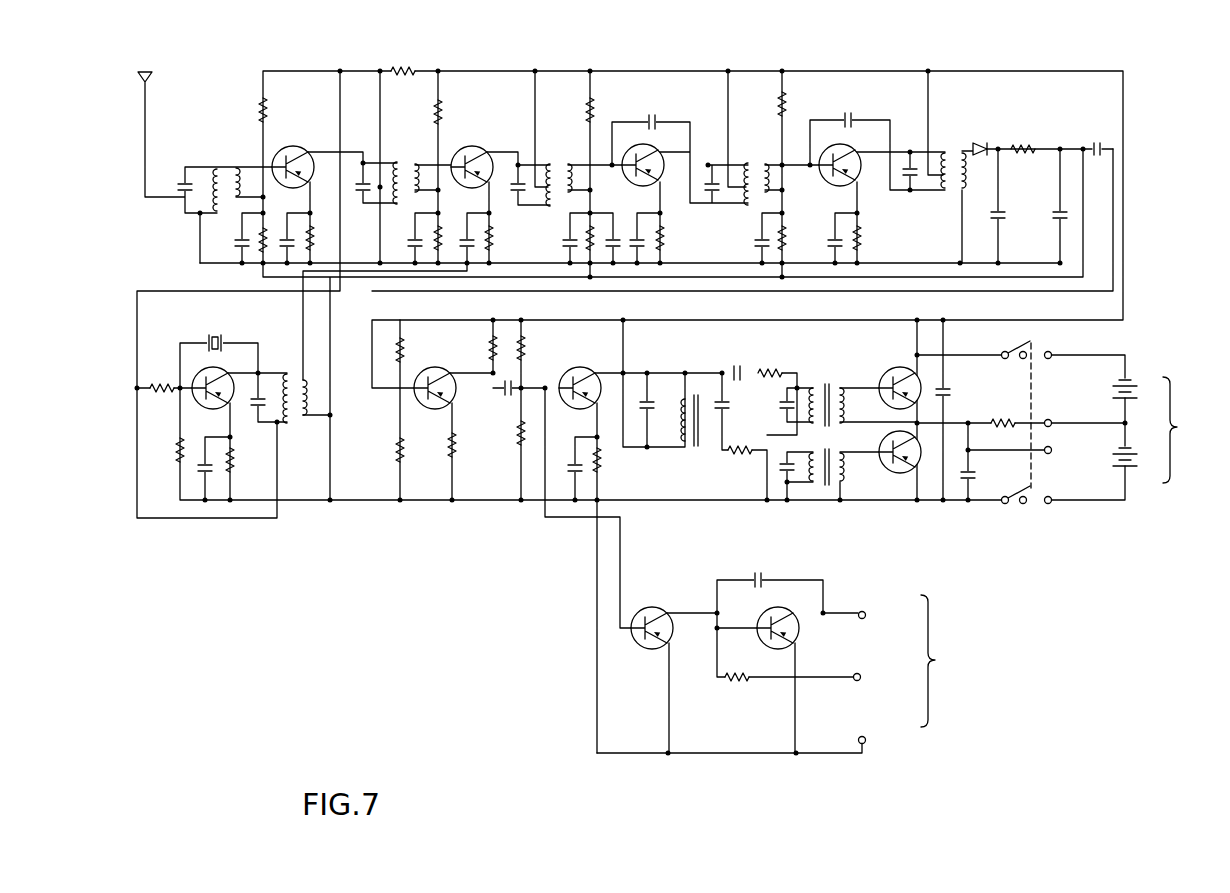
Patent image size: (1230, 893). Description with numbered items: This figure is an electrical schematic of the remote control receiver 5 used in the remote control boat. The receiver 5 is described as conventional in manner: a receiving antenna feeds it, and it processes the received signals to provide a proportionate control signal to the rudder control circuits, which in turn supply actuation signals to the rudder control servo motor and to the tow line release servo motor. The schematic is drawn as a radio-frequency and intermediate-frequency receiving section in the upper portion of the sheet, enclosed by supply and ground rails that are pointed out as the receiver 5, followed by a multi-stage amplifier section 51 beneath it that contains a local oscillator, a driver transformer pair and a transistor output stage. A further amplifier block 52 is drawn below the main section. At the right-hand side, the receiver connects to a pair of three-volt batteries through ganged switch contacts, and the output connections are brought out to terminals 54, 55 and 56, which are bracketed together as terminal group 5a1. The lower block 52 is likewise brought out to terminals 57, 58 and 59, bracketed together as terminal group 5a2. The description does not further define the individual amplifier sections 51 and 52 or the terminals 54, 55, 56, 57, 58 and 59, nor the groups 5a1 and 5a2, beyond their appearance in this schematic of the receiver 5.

The remote control receiver 5 is at (1130, 302).
The amplifier circuit 51 is at (921, 508).
The recording amplifier circuit 52 is at (724, 764).
The terminal 54 is at (1051, 352).
The terminal 55 is at (1051, 448).
The terminal 56 is at (1051, 497).
The terminal 57 is at (865, 613).
The terminal 58 is at (860, 675).
The terminal 59 is at (865, 738).
The terminal group 5a1 is at (1194, 430).
The terminal group 5a2 is at (955, 661).